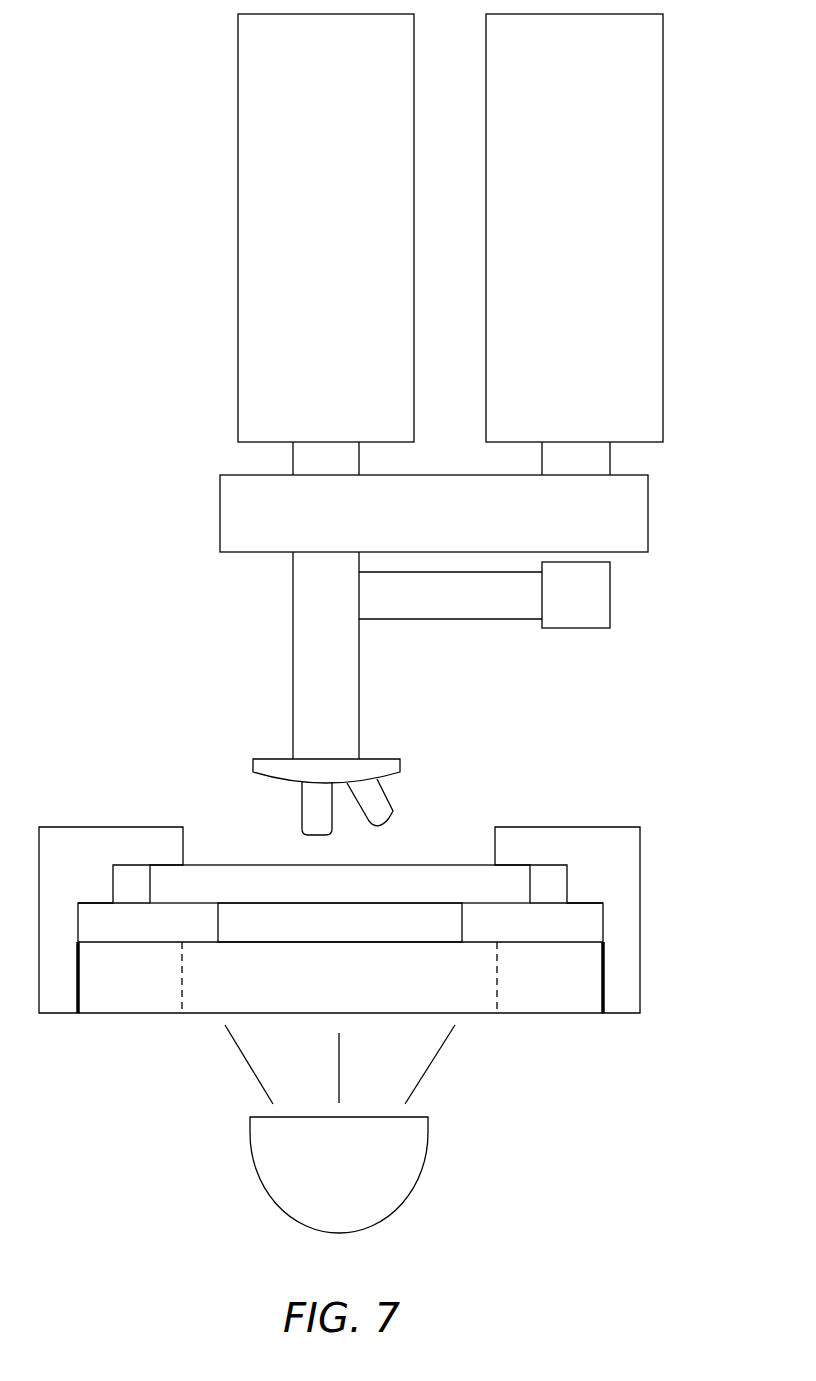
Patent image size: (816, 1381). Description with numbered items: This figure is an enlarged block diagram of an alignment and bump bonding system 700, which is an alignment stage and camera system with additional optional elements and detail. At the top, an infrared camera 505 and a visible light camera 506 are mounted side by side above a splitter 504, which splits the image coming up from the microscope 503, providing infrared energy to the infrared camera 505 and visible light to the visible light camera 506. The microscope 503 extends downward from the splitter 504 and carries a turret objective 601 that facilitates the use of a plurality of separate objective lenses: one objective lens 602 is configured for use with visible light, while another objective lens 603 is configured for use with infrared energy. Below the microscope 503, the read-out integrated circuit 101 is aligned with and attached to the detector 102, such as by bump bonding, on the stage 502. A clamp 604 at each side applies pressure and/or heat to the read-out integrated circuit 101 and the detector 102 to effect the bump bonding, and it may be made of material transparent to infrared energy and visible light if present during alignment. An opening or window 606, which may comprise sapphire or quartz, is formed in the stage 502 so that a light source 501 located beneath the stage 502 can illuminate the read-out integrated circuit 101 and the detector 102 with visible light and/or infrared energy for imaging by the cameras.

The alignment and bump bonding system 700 is at (118, 1176).
The infrared camera 505 is at (238, 401).
The visible light camera 506 is at (663, 392).
The splitter 504 is at (648, 531).
The microscope 503 is at (293, 653).
The turret objective 601 is at (265, 758).
The objective lens 602 is at (302, 815).
The objective lens 603 is at (393, 796).
The clamp 604 is at (77, 827).
The read-out integrated circuit 101 is at (355, 895).
The detector 102 is at (355, 935).
The stage 502 is at (565, 1013).
The window 606 is at (182, 990).
The light source 501 is at (410, 1190).